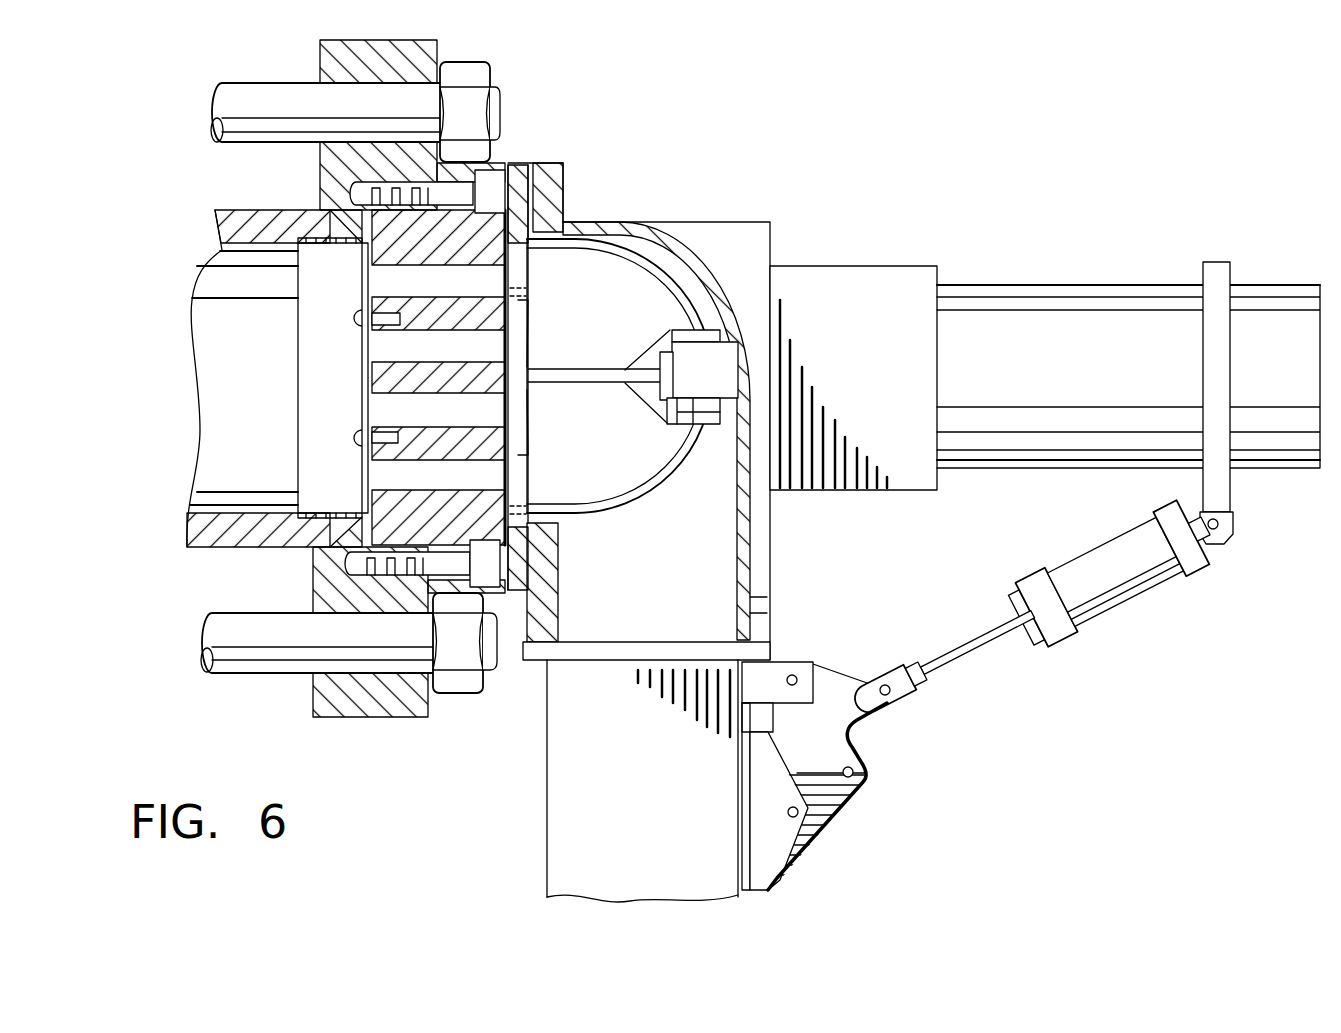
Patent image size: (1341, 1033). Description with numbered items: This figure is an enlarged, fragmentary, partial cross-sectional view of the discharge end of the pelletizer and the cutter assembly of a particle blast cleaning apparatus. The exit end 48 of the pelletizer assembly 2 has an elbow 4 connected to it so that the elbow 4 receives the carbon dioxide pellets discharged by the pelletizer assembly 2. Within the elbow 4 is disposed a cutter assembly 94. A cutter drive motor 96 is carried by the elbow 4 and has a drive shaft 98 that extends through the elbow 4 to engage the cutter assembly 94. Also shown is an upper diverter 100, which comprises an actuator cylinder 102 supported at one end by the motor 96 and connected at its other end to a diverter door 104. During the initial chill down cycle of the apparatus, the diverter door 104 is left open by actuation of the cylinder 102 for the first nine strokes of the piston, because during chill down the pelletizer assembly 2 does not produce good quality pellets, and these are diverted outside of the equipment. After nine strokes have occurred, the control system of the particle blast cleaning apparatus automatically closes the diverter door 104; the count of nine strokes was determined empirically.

The pelletizer assembly 2 is at (176, 178).
The exit end 48 is at (520, 141).
The elbow 4 is at (660, 240).
The cutter assembly 94 is at (662, 519).
The drive shaft 98 is at (682, 372).
The cutter drive motor 96 is at (1052, 305).
The actuator cylinder 102 is at (1103, 558).
The upper diverter 100 is at (1013, 673).
The diverter door 104 is at (843, 750).